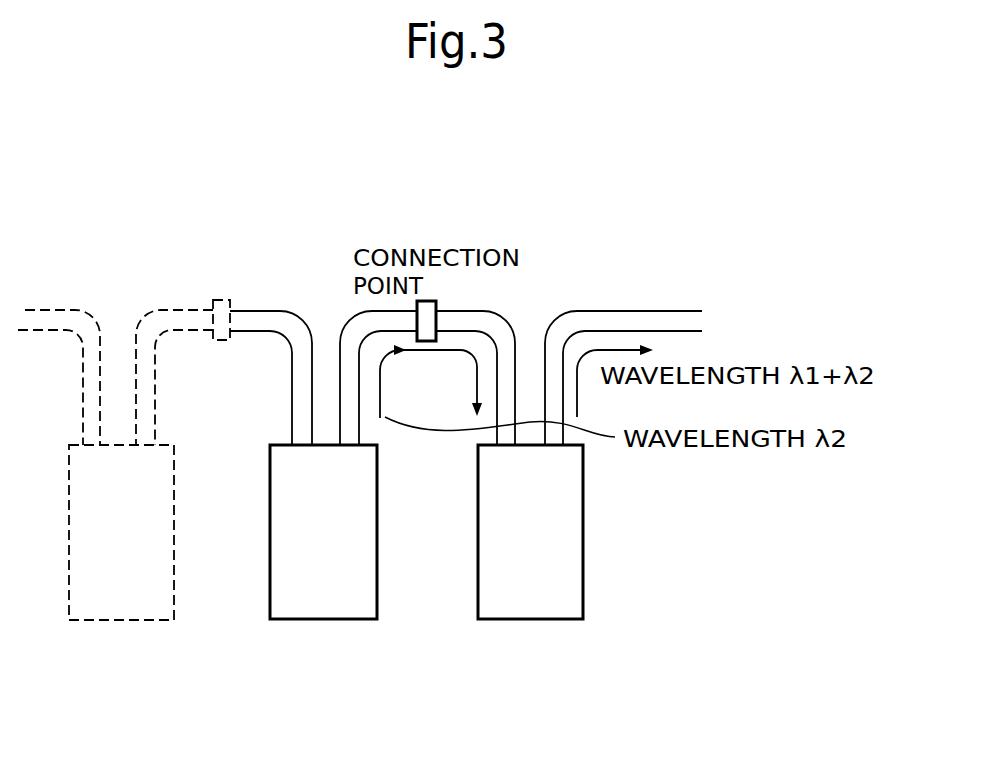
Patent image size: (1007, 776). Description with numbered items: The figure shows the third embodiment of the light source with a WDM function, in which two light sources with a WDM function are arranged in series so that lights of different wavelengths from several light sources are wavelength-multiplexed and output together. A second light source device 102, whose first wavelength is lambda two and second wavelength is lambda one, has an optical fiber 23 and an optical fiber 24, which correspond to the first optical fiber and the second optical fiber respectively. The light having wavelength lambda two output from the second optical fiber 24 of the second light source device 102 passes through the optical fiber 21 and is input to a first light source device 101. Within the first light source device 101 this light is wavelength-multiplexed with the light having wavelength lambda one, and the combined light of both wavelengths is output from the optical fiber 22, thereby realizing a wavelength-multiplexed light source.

The optical fiber 21 is at (509, 323).
The optical fiber 22 is at (670, 309).
The optical fiber 23 is at (252, 311).
The second optical fiber 24 is at (343, 330).
The first light source device 101 is at (533, 621).
The second light source device 102 is at (317, 621).